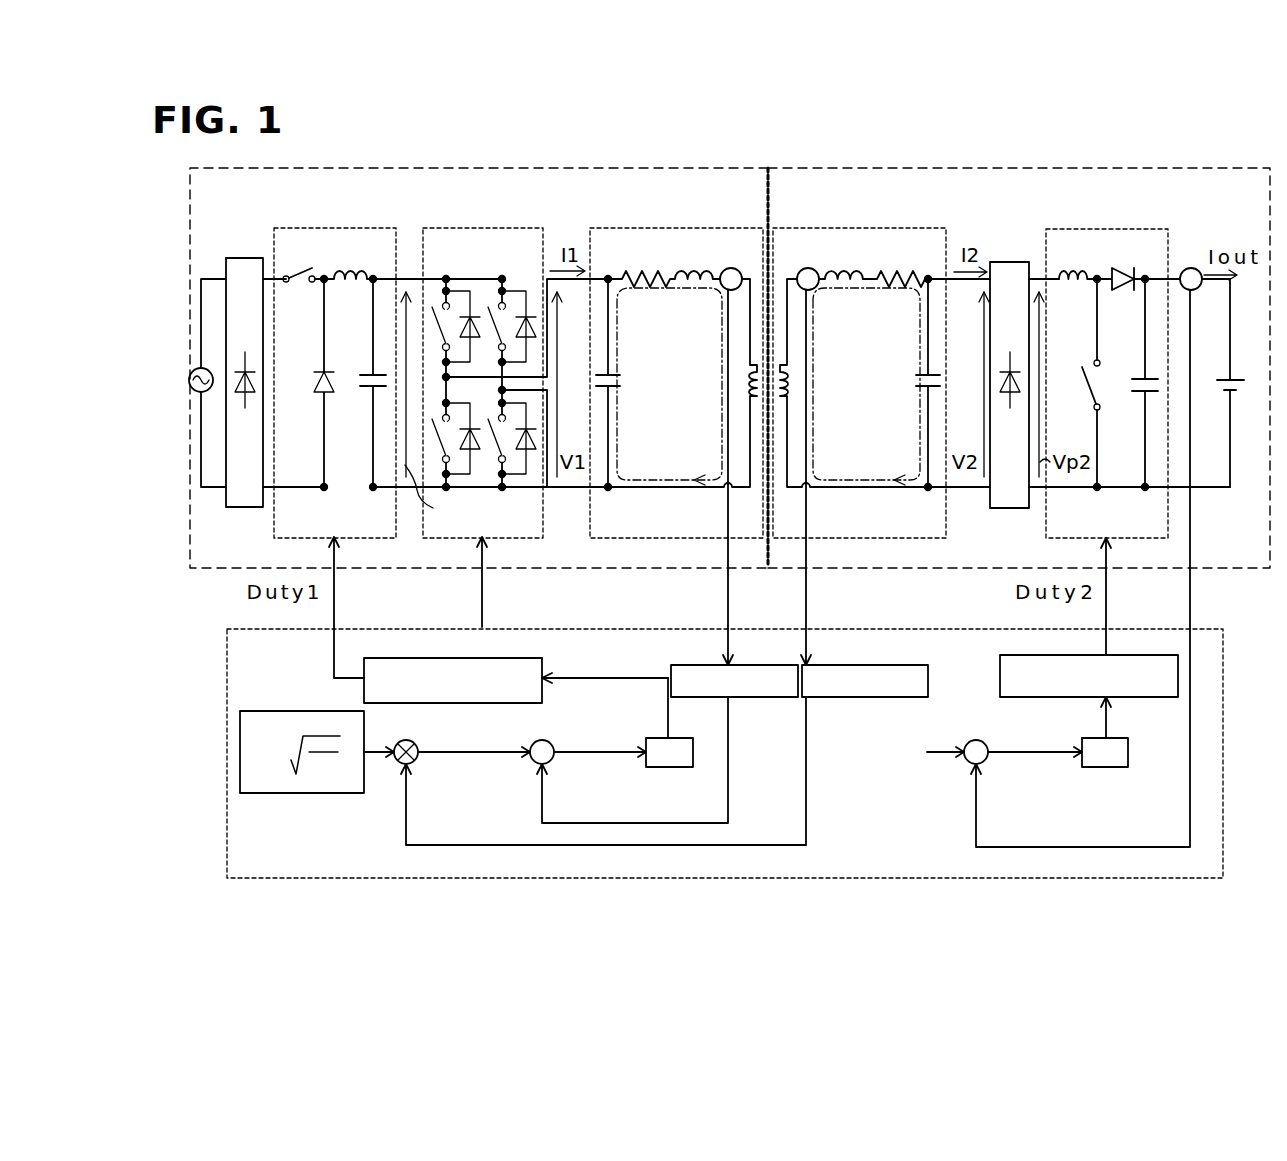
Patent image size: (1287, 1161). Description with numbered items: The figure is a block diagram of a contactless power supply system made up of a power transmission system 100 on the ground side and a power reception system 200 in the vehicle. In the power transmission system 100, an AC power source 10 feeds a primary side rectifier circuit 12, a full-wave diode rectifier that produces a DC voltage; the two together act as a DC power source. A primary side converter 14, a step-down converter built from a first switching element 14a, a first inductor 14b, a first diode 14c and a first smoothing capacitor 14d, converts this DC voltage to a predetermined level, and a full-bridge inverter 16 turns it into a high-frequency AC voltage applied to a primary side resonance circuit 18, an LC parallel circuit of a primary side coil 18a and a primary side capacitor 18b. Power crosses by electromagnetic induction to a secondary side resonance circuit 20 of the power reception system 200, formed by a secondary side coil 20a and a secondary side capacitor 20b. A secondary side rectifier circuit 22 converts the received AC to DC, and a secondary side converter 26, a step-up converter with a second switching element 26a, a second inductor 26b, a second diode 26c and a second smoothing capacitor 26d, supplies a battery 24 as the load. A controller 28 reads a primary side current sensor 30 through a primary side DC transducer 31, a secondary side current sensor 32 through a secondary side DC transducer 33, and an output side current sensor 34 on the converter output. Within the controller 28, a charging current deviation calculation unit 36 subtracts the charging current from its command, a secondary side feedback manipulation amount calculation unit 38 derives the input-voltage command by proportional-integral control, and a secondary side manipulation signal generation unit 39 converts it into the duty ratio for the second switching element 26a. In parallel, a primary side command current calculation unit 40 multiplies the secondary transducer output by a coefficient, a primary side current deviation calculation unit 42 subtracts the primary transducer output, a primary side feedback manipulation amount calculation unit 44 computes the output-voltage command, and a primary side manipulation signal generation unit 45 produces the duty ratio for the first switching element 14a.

The AC power source 10 is at (205, 368).
The primary side rectifier circuit 12 is at (255, 258).
The primary side converter 14 is at (380, 228).
The first switching element 14a is at (290, 275).
The first inductor 14b is at (348, 269).
The first diode 14c is at (312, 368).
The first smoothing capacitor 14d is at (362, 373).
The full-bridge inverter 16 is at (526, 228).
The primary side resonance circuit 18 is at (751, 228).
The primary side coil 18a is at (742, 383).
The primary side capacitor 18b is at (618, 376).
The secondary side resonance circuit 20 is at (931, 228).
The secondary side coil 20a is at (797, 383).
The secondary side capacitor 20b is at (919, 376).
The secondary side rectifier circuit 22 is at (1019, 260).
The battery 24 is at (1245, 380).
The secondary side converter 26 is at (1153, 229).
The second switching element 26a is at (1085, 372).
The second inductor 26b is at (1069, 272).
The second diode 26c is at (1132, 270).
The second smoothing capacitor 26d is at (1134, 376).
The controller 28 is at (1208, 628).
The primary side current sensor 30 is at (728, 268).
The primary side DC transducer 31 is at (756, 665).
The secondary side current sensor 32 is at (808, 268).
The secondary side DC transducer 33 is at (849, 665).
The output side current sensor 34 is at (1190, 267).
The charging current deviation calculation unit 36 is at (974, 740).
The secondary side feedback manipulation amount calculation unit 38 is at (1115, 768).
The secondary side manipulation signal generation unit 39 is at (1118, 650).
The primary side command current calculation unit 40 is at (406, 740).
The primary side current deviation calculation unit 42 is at (541, 740).
The primary side feedback manipulation amount calculation unit 44 is at (680, 768).
The primary side manipulation signal generation unit 45 is at (535, 658).
The power transmission system 100 is at (736, 167).
The power reception system 200 is at (1240, 167).